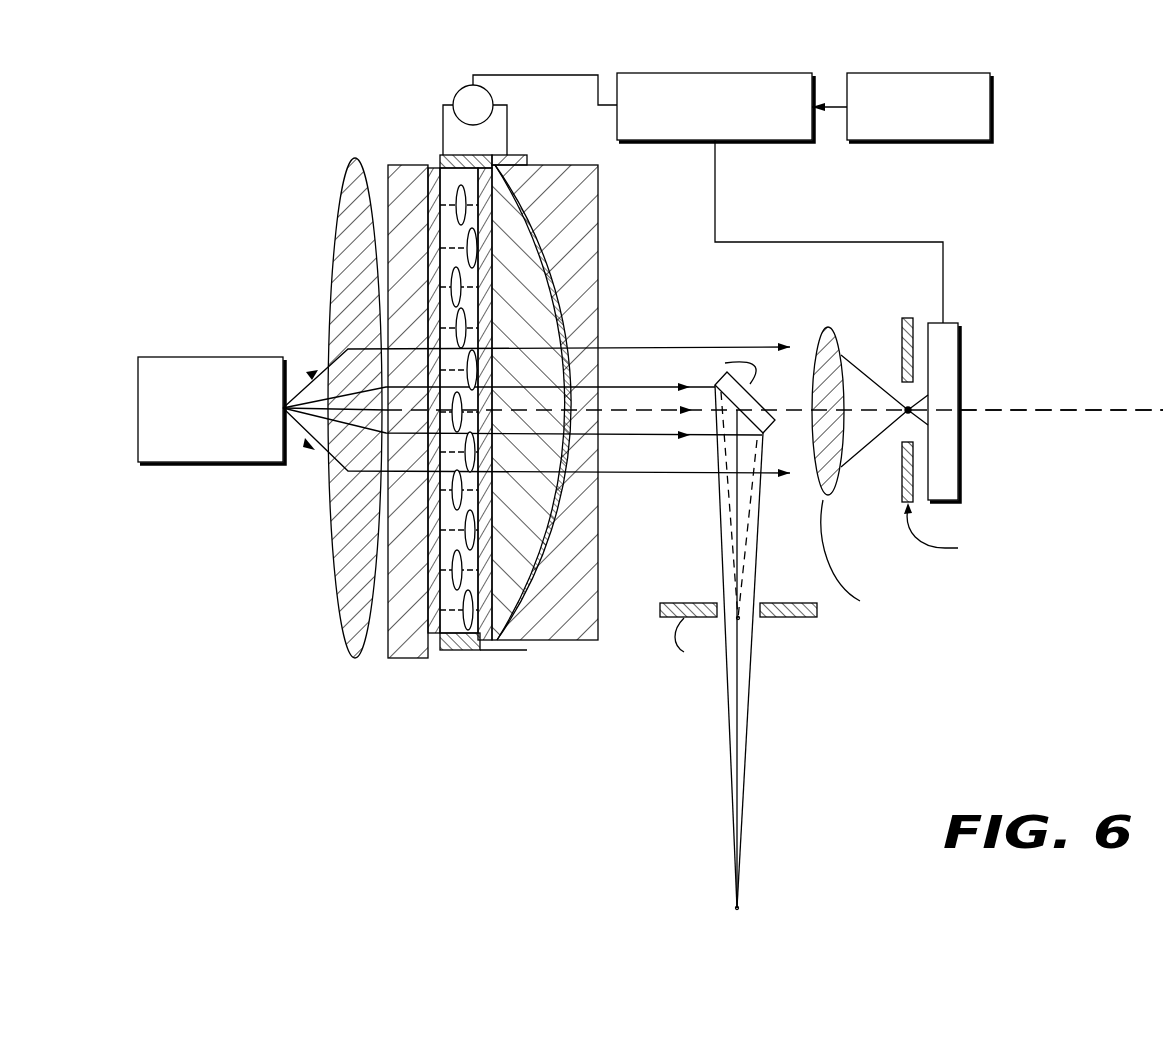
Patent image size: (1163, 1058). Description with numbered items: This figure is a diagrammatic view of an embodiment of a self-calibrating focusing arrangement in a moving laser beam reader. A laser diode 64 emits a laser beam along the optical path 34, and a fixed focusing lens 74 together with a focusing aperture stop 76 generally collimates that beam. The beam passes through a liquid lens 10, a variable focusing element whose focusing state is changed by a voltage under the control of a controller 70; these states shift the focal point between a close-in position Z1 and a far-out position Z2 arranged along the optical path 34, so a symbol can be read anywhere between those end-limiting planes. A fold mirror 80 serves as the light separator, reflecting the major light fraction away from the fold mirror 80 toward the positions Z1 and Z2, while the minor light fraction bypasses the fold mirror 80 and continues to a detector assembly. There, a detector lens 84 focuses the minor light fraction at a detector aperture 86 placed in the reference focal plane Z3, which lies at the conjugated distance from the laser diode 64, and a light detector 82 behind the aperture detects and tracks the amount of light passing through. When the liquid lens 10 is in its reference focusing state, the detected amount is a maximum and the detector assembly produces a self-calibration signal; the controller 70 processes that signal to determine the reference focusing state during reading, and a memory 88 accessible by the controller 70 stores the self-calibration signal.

The liquid lens 10 is at (382, 132).
The optical path 34 is at (1070, 410).
The laser diode 64 is at (209, 357).
The controller 70 is at (750, 142).
The fixed focusing lens 74 is at (346, 201).
The focusing aperture stop 76 is at (818, 612).
The fold mirror 80 is at (773, 425).
The light detector 82 is at (962, 471).
The detector lens 84 is at (902, 483).
The detector aperture 86 is at (1017, 451).
The memory 88 is at (915, 142).
The close-in position Z1 is at (740, 638).
The far-out position Z2 is at (738, 900).
The reference focal plane Z3 is at (905, 413).